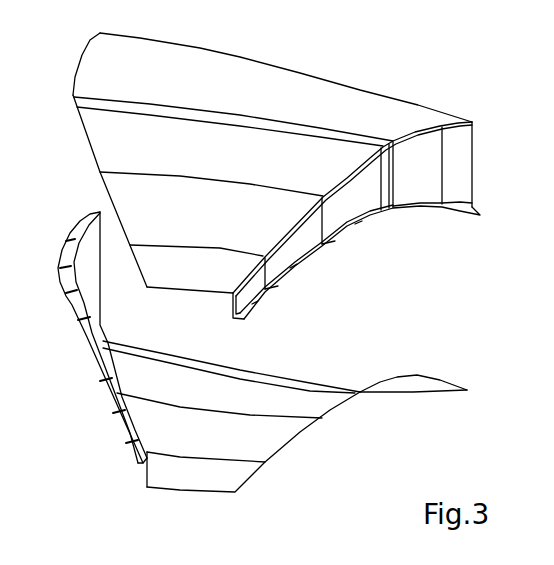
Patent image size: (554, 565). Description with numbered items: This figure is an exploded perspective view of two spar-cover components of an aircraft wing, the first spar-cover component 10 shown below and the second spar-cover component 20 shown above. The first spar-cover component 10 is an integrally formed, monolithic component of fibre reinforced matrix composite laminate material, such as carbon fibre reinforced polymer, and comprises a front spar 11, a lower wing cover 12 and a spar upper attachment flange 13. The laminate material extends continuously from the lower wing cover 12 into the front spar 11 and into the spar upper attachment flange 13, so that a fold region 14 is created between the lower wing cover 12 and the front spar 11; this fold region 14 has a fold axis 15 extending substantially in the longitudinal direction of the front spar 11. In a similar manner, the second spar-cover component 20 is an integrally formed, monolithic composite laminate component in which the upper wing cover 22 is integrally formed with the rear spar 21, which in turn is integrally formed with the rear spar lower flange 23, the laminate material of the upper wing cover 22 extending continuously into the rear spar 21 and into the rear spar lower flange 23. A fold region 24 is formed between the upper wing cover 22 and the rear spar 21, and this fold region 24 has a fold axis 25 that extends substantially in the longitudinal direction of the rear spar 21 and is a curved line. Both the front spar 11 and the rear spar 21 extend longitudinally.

The first spar-cover component 10 is at (233, 440).
The front spar 11 is at (100, 340).
The lower wing cover 12 is at (310, 405).
The spar upper attachment flange 13 is at (120, 410).
The fold region 14 is at (90, 371).
The fold axis 15 is at (147, 462).
The second spar-cover component 20 is at (282, 152).
The rear spar 21 is at (422, 187).
The upper wing cover 22 is at (112, 132).
The rear spar lower flange 23 is at (300, 254).
The fold region 24 is at (395, 140).
The fold axis 25 is at (233, 293).